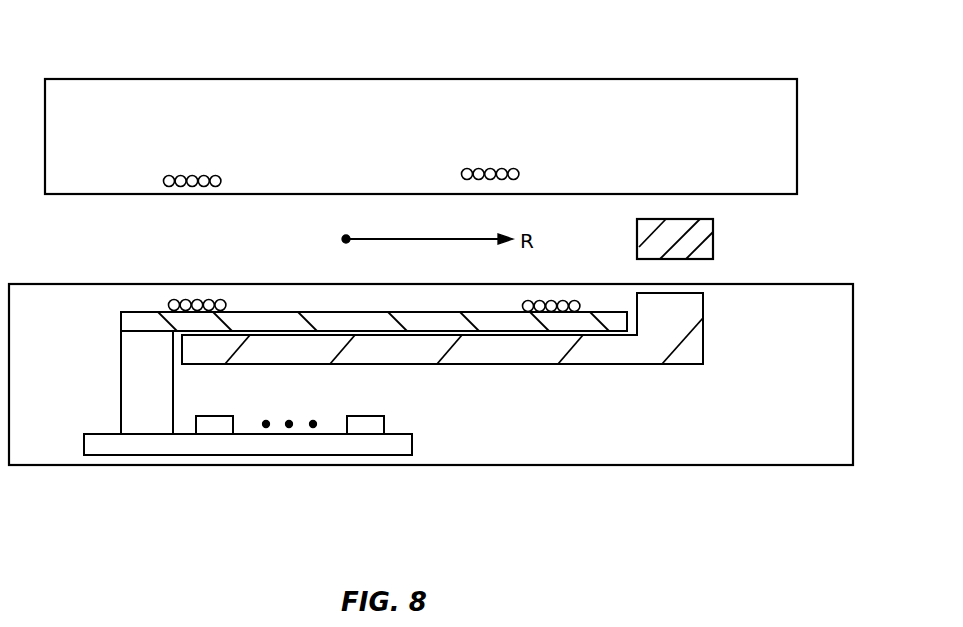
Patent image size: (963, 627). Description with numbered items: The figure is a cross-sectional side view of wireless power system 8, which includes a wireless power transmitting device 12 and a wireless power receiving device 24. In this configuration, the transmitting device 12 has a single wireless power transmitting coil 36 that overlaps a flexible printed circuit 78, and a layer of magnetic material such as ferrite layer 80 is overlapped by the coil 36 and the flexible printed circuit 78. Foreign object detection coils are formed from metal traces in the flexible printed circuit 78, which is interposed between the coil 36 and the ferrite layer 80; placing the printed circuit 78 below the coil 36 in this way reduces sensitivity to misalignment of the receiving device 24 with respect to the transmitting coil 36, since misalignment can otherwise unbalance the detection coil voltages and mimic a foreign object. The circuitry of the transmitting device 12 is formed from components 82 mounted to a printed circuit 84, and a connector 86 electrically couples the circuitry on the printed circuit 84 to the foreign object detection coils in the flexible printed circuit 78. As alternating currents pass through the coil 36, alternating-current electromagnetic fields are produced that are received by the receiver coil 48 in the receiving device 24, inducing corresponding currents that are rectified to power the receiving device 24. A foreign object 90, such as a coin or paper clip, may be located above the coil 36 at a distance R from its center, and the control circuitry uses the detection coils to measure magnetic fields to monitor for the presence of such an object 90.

The wireless power system 8 is at (872, 56).
The wireless power transmitting device 12 is at (497, 466).
The wireless power receiving device 24 is at (597, 79).
The wireless power transmitting coil 36 is at (228, 306).
The receiver coil 48 is at (113, 165).
The flexible printed circuit 78 is at (493, 322).
The ferrite layer 80 is at (618, 355).
The components 82 is at (227, 423).
The printed circuit 84 is at (262, 447).
The connector 86 is at (128, 401).
The foreign object 90 is at (714, 240).